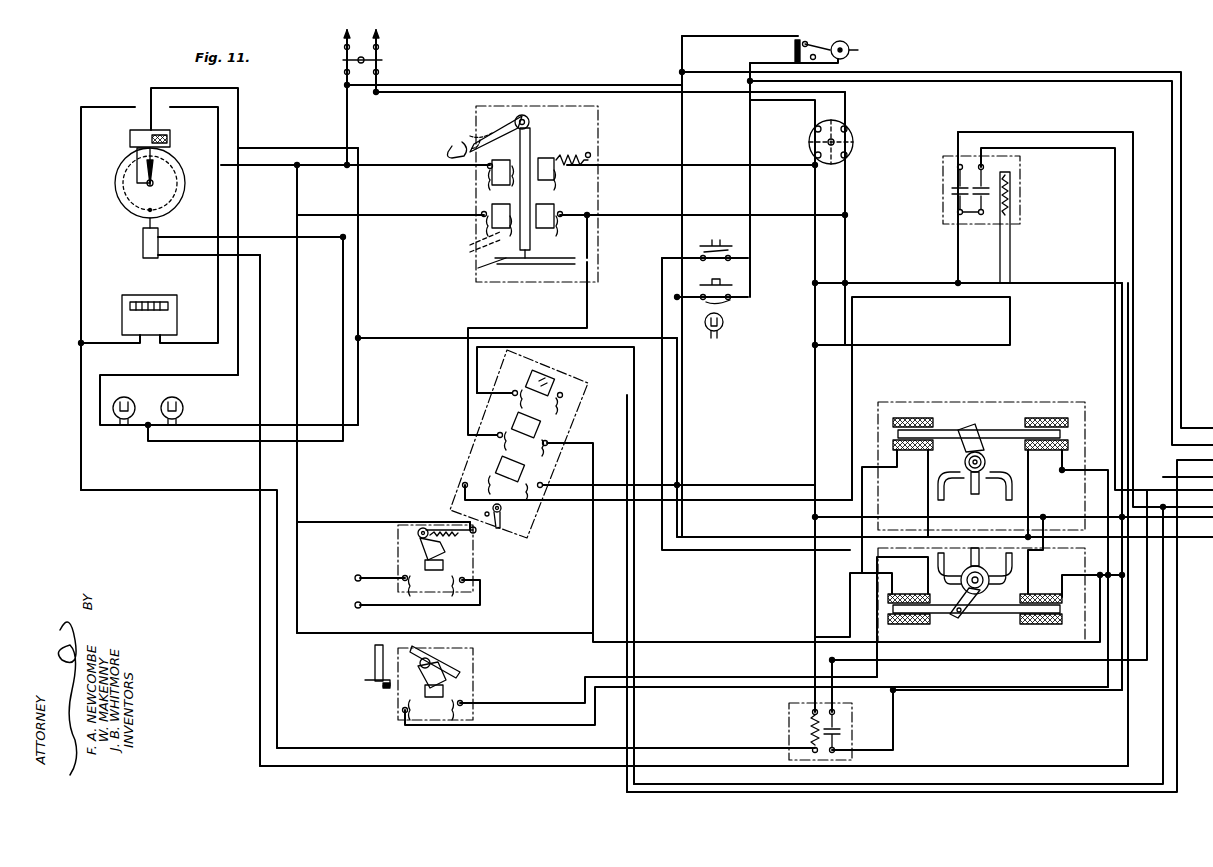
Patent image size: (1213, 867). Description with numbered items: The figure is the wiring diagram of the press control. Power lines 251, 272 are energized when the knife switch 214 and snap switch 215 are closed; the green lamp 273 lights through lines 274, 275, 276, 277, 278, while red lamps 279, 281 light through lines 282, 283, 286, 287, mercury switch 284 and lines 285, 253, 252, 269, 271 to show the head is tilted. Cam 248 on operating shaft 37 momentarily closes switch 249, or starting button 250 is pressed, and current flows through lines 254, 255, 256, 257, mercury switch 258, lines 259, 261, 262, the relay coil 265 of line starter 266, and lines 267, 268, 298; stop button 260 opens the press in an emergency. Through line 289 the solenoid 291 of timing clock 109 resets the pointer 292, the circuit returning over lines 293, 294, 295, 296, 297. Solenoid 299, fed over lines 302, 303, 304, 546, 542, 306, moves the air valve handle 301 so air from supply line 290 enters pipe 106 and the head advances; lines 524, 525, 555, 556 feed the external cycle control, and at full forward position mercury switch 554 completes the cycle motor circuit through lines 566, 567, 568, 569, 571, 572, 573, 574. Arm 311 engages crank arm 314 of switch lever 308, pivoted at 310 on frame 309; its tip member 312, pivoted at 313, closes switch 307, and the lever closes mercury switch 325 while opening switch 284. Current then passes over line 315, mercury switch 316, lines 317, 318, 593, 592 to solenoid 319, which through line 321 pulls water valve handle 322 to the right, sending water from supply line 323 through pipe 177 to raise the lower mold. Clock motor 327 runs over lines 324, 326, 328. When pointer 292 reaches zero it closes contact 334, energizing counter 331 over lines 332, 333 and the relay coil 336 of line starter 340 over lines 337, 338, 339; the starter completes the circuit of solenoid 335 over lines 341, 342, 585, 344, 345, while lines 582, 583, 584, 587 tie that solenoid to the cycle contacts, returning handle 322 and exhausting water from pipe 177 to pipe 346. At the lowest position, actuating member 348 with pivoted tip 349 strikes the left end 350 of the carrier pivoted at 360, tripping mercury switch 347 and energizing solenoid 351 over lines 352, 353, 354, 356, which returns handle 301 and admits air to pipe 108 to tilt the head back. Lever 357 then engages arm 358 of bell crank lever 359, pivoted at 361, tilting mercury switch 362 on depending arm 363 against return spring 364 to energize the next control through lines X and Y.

The operating shaft 37 is at (844, 44).
The pipe 106 is at (1012, 470).
The pipe line 108 is at (955, 482).
The timing clock 109 is at (133, 208).
The pipe 177 is at (936, 568).
The knife switch 214 is at (381, 50).
The snap switch 215 is at (854, 136).
The cam 248 is at (856, 50).
The switch 249 is at (850, 66).
The starting button 250 is at (740, 302).
The power line 251 is at (380, 80).
The line 252 is at (684, 120).
The line 253 is at (846, 190).
The line 254 is at (751, 134).
The line 255 is at (683, 152).
The line 256 is at (679, 424).
The line 257 is at (578, 485).
The mercury switch 258 is at (470, 464).
The line 259 is at (562, 500).
The stop button 260 is at (730, 242).
The line 261 is at (853, 370).
The line 262 is at (920, 297).
The relay coil 265 is at (998, 222).
The line starter 266 is at (1022, 212).
The line 267 is at (1012, 264).
The line 268 is at (946, 345).
The line 269 is at (752, 254).
The line 271 is at (552, 85).
The power line 272 is at (347, 85).
The green signal lamp 273 is at (134, 407).
The line 274 is at (342, 325).
The line 275 is at (310, 443).
The line 276 is at (202, 374).
The line 277 is at (240, 175).
The line 278 is at (305, 148).
The red lamp 279 is at (185, 404).
The red lamp 281 is at (724, 322).
The line 282 is at (318, 426).
The line 283 is at (360, 302).
The mercury switch 284 is at (583, 205).
The line 285 is at (716, 214).
The line 286 is at (432, 338).
The line 287 is at (754, 344).
The line 289 is at (262, 237).
The compressed air supply line 290 is at (978, 490).
The solenoid 291 is at (142, 245).
The pointer 292 is at (165, 168).
The line 293 is at (205, 255).
The line 294 is at (261, 350).
The line 295 is at (368, 768).
The line 296 is at (1128, 735).
The line 297 is at (1044, 133).
The line 298 is at (884, 283).
The solenoid 299 is at (1082, 420).
The air valve operating handle 301 is at (978, 428).
The line 302 is at (1048, 152).
The line 303 is at (1115, 240).
The line 304 is at (1043, 496).
The line 306 is at (760, 420).
The switch 307 is at (522, 272).
The switch lever 308 is at (484, 242).
The stationary supporting frame 309 is at (598, 118).
The pivot 310 is at (531, 122).
The arm 311 is at (450, 148).
The tip member 312 is at (478, 266).
The pivot 313 is at (535, 240).
The crank arm 314 is at (463, 128).
The line 315 is at (588, 306).
The mercury switch 316 is at (470, 420).
The line 317 is at (600, 446).
The line 318 is at (754, 648).
The solenoid 319 is at (1040, 594).
The line 321 is at (1034, 560).
The water valve operating handle 322 is at (966, 612).
The supply line 323 is at (980, 568).
The line 324 is at (632, 165).
The mercury switch 325 is at (548, 148).
The line 326 is at (398, 210).
The clock motor 327 is at (160, 128).
The line 328 is at (212, 88).
The counter 331 is at (134, 294).
The line 332 is at (210, 312).
The line 333 is at (82, 255).
The contact 334 is at (136, 145).
The solenoid 335 is at (926, 616).
The relay coil 336 is at (788, 728).
The line 337 is at (340, 746).
The line 338 is at (276, 680).
The line 339 is at (172, 490).
The line starter 340 is at (844, 732).
The line 341 is at (298, 522).
The line 342 is at (550, 633).
The line 344 is at (982, 690).
The line 345 is at (1123, 334).
The pipe 346 is at (1002, 596).
The mercury switch 347 is at (456, 672).
The actuating member 348 is at (375, 656).
The pivoted tip portion 349 is at (382, 688).
The left end 350 is at (400, 633).
The solenoid 351 is at (915, 416).
The line 352 is at (864, 500).
The line 353 is at (702, 678).
The line 354 is at (520, 703).
The line 356 is at (498, 727).
The lever 357 is at (502, 518).
The arm 358 is at (478, 534).
The bell crank lever 359 is at (404, 528).
The pivot 360 is at (430, 660).
The pivot 361 is at (422, 518).
The mercury switch 362 is at (408, 566).
The depending arm 363 is at (405, 540).
The return spring 364 is at (460, 556).
The line 524 is at (1114, 76).
The line 525 is at (1196, 428).
The line 542 is at (1197, 540).
The line 546 is at (1196, 568).
The mercury switch 554 is at (548, 372).
The line 555 is at (1172, 102).
The line 556 is at (1180, 444).
The line 566 is at (1180, 460).
The line 567 is at (1163, 750).
The line 568 is at (958, 790).
The line 569 is at (630, 600).
The line 571 is at (605, 584).
The line 572 is at (896, 786).
The line 573 is at (1177, 656).
The line 574 is at (1178, 476).
The line 582 is at (1120, 507).
The line 583 is at (1163, 620).
The line 584 is at (1040, 660).
The line 585 is at (815, 606).
The line 587 is at (818, 562).
The line 592 is at (1118, 490).
The line 593 is at (1096, 580).